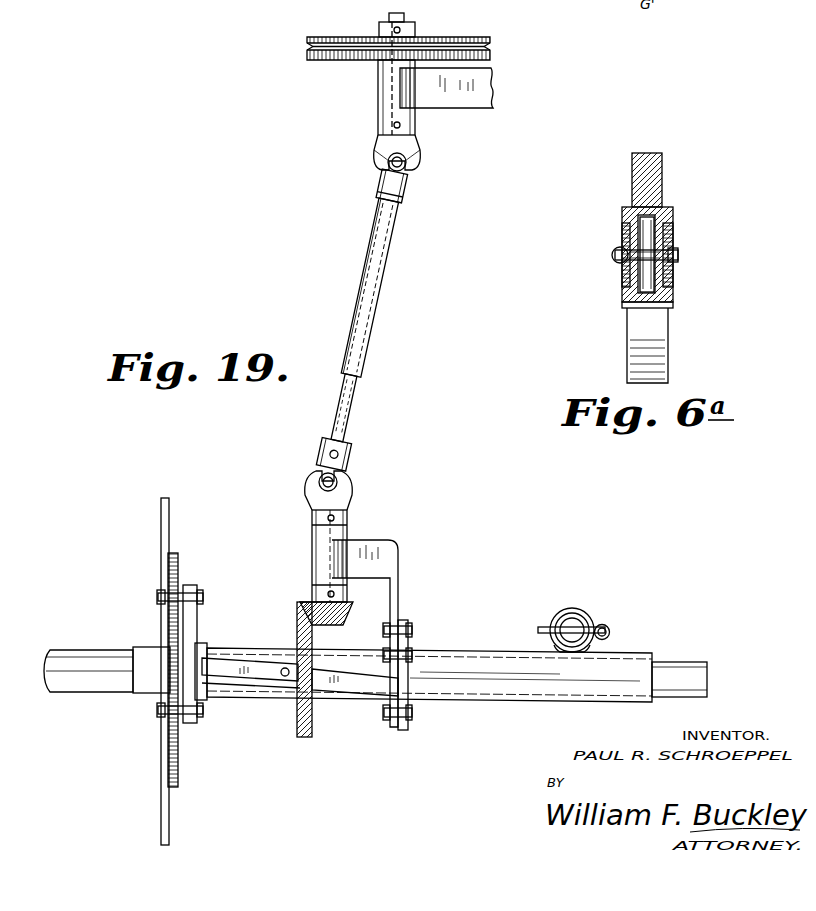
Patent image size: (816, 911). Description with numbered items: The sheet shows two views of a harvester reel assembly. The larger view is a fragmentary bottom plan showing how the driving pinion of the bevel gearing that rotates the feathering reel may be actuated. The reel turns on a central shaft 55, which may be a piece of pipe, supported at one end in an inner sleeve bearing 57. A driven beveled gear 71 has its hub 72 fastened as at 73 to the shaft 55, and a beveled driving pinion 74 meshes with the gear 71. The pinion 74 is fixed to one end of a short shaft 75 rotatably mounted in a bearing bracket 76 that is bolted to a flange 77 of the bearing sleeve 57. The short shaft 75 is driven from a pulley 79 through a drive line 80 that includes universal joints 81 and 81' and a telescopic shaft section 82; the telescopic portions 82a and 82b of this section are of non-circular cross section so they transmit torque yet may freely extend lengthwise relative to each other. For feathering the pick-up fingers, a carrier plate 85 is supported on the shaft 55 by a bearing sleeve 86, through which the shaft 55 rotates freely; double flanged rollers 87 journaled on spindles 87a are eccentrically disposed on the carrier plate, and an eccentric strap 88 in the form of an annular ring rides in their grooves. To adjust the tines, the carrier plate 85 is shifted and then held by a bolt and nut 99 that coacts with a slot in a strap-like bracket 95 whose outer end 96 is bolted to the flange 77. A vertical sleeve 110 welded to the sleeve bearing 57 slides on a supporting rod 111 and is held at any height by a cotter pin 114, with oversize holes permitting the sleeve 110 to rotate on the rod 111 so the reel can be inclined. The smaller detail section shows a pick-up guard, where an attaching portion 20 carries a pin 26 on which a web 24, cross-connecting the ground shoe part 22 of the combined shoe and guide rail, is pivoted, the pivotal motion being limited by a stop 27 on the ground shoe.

In FIG. 19, the pulley 79 is at (433, 37).
In FIG. 19, the universal joint 81 is at (417, 154).
In FIG. 19, the drive line 80 is at (381, 183).
In FIG. 19, the telescopic shaft section 82 is at (358, 302).
In FIG. 19, the telescopic portion 82a is at (383, 232).
In FIG. 19, the telescopic portion 82b is at (350, 409).
In FIG. 19, the universal joint 81' is at (348, 489).
In FIG. 19, the short shaft 75 is at (340, 548).
In FIG. 19, the bearing bracket 76 is at (382, 554).
In FIG. 19, the beveled driving pinion 74 is at (352, 613).
In FIG. 19, the flange 77 is at (405, 660).
In FIG. 19, the outer end 96 is at (385, 712).
In FIG. 19, the driven beveled gear 71 is at (306, 732).
In FIG. 19, the strap-like bracket 95 is at (330, 690).
In FIG. 19, the sleeve bearing 57 is at (565, 680).
In FIG. 19, the vertical sleeve 110 is at (560, 615).
In FIG. 19, the supporting rod 111 is at (576, 625).
In FIG. 19, the cotter pin 114 is at (611, 632).
In FIG. 19, the eccentric strap 88 is at (168, 748).
In FIG. 19, the bearing sleeve 86 is at (150, 648).
In FIG. 19, the central shaft 55 is at (110, 682).
In FIG. 19, the carrier plate 85 is at (197, 621).
In FIG. 19, the double flanged rollers 87 is at (160, 583).
In FIG. 19, the spindles 87a is at (158, 601).
In FIG. 19, the bolt and nut 99 is at (203, 648).
In FIG. 19, the hub 72 is at (278, 700).
In FIG. 19, the fastening 73 is at (286, 667).
In FIG. 6A, the stop 27 is at (647, 153).
In FIG. 6A, the web 24 is at (672, 222).
In FIG. 6A, the attaching portion 20 is at (640, 219).
In FIG. 6A, the pin 26 is at (612, 256).
In FIG. 6A, the ground shoe part 22 is at (660, 332).